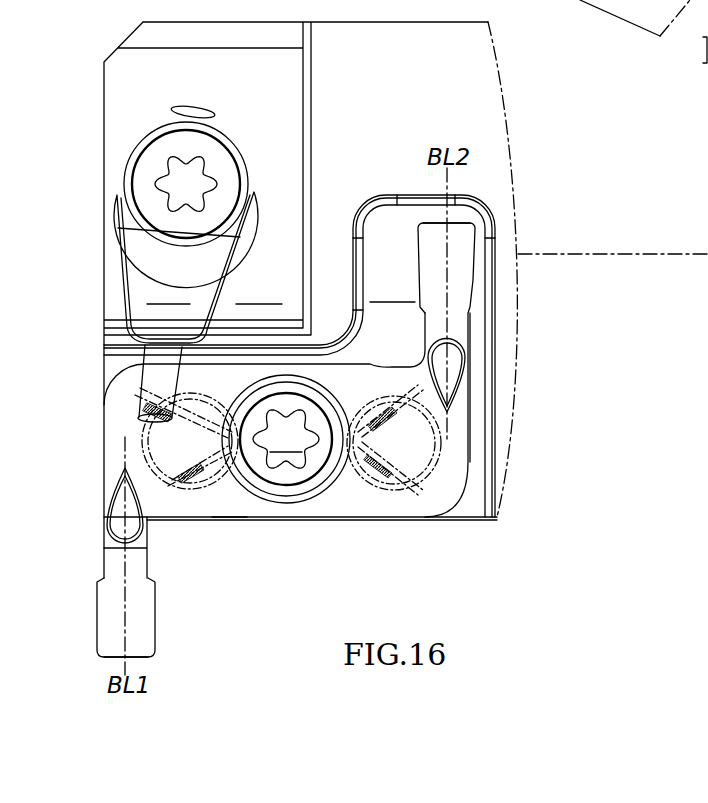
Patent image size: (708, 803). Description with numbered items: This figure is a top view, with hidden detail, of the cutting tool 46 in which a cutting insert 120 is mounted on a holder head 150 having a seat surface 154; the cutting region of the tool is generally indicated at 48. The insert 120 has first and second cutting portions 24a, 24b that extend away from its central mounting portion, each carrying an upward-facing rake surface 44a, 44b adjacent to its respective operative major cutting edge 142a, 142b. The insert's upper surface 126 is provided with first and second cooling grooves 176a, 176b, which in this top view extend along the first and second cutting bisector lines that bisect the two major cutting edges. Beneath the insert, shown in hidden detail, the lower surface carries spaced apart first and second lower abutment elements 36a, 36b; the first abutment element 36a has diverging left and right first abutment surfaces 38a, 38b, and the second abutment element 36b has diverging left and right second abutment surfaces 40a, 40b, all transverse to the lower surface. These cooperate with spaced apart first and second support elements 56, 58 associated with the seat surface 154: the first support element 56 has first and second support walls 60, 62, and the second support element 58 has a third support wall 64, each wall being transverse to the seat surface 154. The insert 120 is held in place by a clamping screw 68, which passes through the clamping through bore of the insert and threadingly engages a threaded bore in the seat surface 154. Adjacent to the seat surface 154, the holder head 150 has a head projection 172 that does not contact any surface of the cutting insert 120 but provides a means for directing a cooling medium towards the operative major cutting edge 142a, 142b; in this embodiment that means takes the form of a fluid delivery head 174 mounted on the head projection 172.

The tool holder body 46 is at (530, 102).
The cutting portion boundary 48 is at (489, 147).
The holder head 150 is at (336, 296).
The head projection 172 is at (259, 292).
The fluid delivery head 174 is at (186, 263).
The second cutting portion 24b is at (479, 278).
The seat surface 154 is at (396, 290).
The rake surface 44b is at (470, 245).
The operative major cutting edge 142b is at (468, 212).
The second cooling groove 176b is at (449, 359).
The first support element 56 is at (405, 431).
The second lower abutment element 36b is at (405, 447).
The first support wall 60 is at (365, 462).
The left second abutment surface 40a is at (379, 474).
The cutting insert 120 is at (421, 503).
The second support wall 62 is at (361, 400).
The right second abutment surface 40b is at (379, 408).
The clamping screw 68 is at (286, 439).
The left first abutment surface 38a is at (183, 416).
The second support element 58 is at (163, 438).
The first lower abutment element 36a is at (167, 457).
The right first abutment surface 38b is at (183, 486).
The third support wall 64 is at (185, 480).
The upper surface 126 is at (234, 505).
The first cooling groove 176a is at (120, 506).
The first cutting portion 24a is at (97, 590).
The rake surface 44a is at (112, 627).
The operative major cutting edge 142a is at (119, 656).